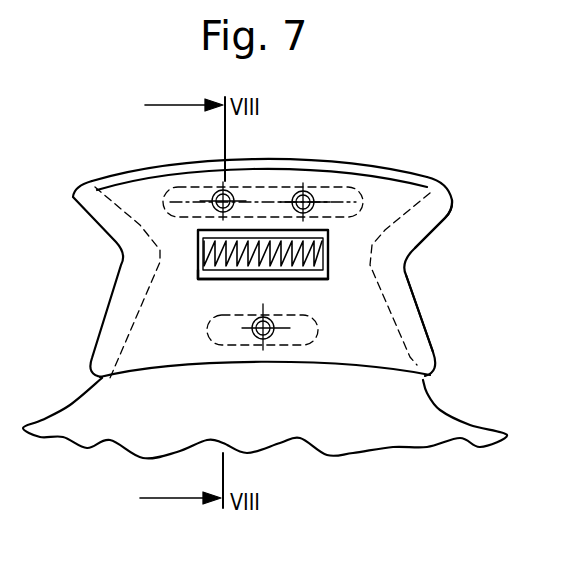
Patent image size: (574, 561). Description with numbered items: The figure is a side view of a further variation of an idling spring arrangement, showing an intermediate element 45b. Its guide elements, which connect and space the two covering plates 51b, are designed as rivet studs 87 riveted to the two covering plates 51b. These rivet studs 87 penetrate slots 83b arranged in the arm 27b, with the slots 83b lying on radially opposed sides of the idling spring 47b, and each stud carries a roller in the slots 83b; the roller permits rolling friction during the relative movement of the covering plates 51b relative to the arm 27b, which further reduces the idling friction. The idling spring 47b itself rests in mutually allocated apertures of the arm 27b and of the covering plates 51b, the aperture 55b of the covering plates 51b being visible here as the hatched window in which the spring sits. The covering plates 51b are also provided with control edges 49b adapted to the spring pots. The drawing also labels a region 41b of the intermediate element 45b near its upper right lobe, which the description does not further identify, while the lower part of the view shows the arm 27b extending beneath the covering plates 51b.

The arm 27b is at (413, 428).
The clamp body lobe 41b is at (413, 240).
The intermediate element 45b is at (411, 158).
The idling spring 47b is at (258, 241).
The control edges 49b is at (425, 318).
The covering plates 51b is at (160, 183).
The aperture 55b is at (200, 279).
The slots 83b is at (338, 192).
The rivet studs 87 is at (268, 339).